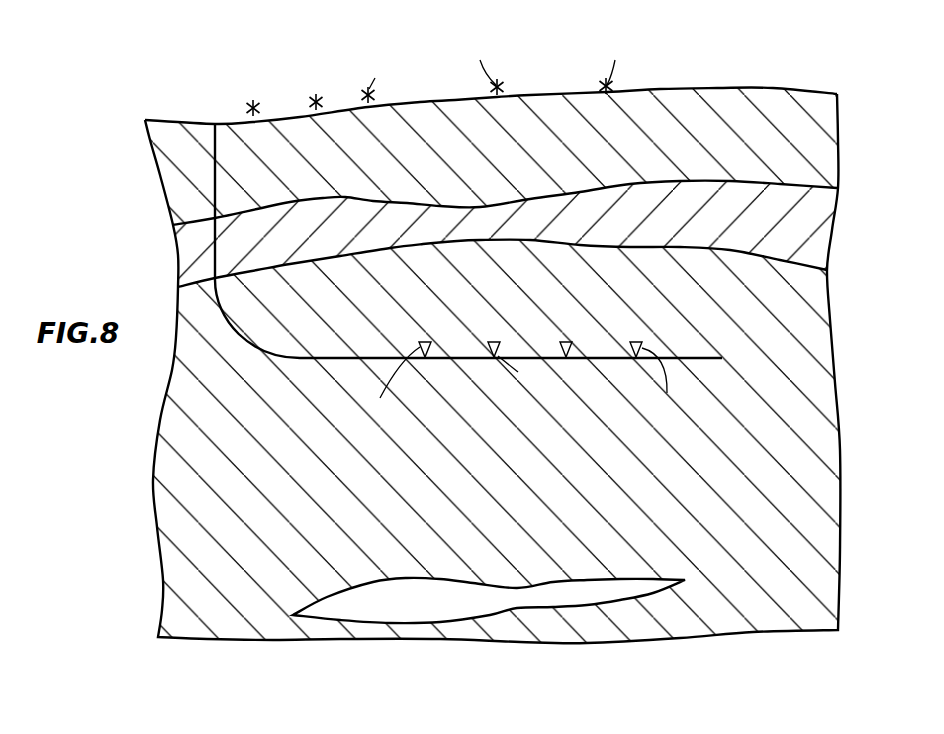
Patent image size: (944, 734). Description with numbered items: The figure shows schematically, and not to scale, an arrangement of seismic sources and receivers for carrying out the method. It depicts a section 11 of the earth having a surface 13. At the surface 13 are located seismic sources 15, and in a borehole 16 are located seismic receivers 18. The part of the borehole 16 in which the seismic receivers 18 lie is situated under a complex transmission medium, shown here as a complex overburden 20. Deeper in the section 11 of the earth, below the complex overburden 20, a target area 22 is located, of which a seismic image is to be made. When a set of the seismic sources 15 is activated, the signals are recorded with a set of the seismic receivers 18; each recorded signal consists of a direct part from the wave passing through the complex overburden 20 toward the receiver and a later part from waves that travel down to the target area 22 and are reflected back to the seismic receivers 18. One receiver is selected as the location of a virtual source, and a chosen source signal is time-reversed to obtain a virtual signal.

The section of the earth 11 is at (698, 642).
The surface 13 is at (733, 88).
The seismic sources 15 is at (367, 92).
The borehole 16 is at (214, 142).
The seismic receivers 18 is at (420, 347).
The complex overburden 20 is at (568, 230).
The target area 22 is at (404, 610).